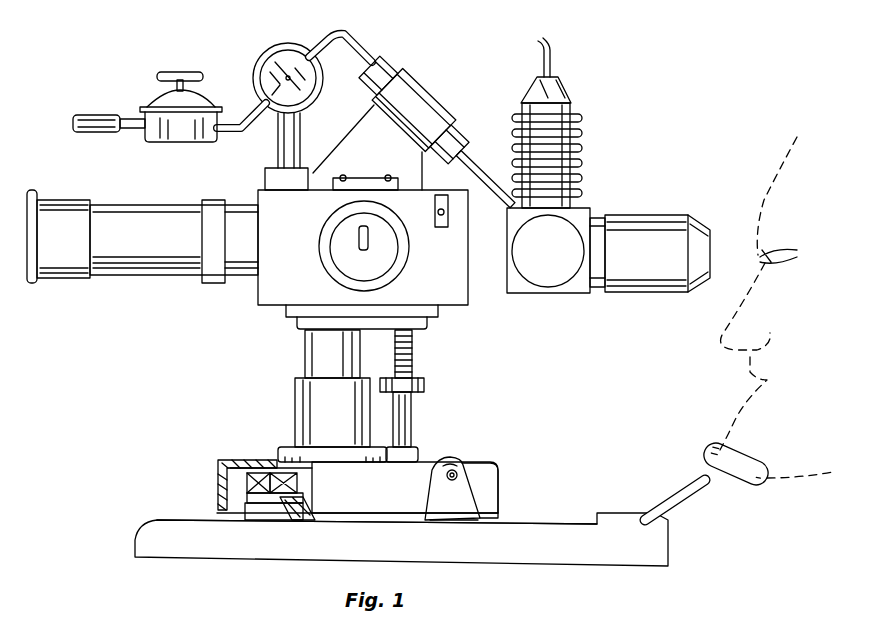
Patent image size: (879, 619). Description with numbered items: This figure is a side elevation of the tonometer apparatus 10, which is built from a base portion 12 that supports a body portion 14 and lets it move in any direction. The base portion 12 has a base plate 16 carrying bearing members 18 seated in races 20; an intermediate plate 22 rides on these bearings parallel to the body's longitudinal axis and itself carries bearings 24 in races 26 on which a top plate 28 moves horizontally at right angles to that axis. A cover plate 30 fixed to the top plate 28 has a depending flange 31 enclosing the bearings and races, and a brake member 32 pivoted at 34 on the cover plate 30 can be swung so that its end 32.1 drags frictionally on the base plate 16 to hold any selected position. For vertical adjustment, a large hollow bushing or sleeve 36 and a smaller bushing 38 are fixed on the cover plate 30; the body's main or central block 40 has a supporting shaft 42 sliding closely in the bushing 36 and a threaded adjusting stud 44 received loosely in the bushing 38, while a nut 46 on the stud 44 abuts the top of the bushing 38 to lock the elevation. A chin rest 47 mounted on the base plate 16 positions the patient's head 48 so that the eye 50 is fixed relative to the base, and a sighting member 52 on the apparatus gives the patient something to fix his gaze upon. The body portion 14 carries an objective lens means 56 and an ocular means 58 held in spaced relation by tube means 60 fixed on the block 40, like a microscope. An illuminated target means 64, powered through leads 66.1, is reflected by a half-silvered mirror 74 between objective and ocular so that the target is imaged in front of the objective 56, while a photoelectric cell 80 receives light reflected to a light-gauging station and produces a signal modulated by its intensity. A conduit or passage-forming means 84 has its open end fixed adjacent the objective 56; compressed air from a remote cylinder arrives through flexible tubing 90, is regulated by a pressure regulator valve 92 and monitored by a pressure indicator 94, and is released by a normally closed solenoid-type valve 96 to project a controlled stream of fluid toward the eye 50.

The tonometer apparatus 10 is at (612, 108).
The base portion 12 is at (544, 521).
The body portion 14 is at (455, 310).
The base plate 16 is at (147, 540).
The bearing members 18 is at (303, 507).
The races 20 is at (257, 515).
The intermediate plate 22 is at (283, 500).
The bearings 24 is at (267, 473).
The races 26 is at (227, 462).
The top plate 28 is at (290, 467).
The cover plate 30 is at (246, 462).
The depending flange 31 is at (218, 507).
The brake member 32 is at (458, 462).
The brake member end 32.1 is at (460, 520).
The pivot 34 is at (458, 473).
The hollow bushing or sleeve 36 is at (295, 403).
The hollow bushing or sleeve 38 is at (413, 413).
The main or central block 40 is at (283, 290).
The supporting shaft 42 is at (307, 356).
The threaded adjusting stud 44 is at (415, 357).
The nut 46 is at (426, 385).
The chin rest 47 is at (715, 493).
The patient's head 48 is at (773, 383).
The eye 50 is at (762, 257).
The sighting member 52 is at (450, 228).
The objective lens means 56 is at (642, 215).
The ocular means 58 is at (60, 212).
The tube means 60 is at (230, 205).
The illuminated target means 64 is at (570, 92).
The leads 66.1 is at (550, 50).
The half-silvered mirror 74 is at (578, 300).
The photoelectric cell 80 is at (331, 228).
The conduit or passage-forming means 84 is at (352, 39).
The tubing 90 is at (83, 113).
The pressure regulator valve 92 is at (153, 98).
The pressure indicator 94 is at (277, 44).
The solenoid-type valve 96 is at (430, 85).